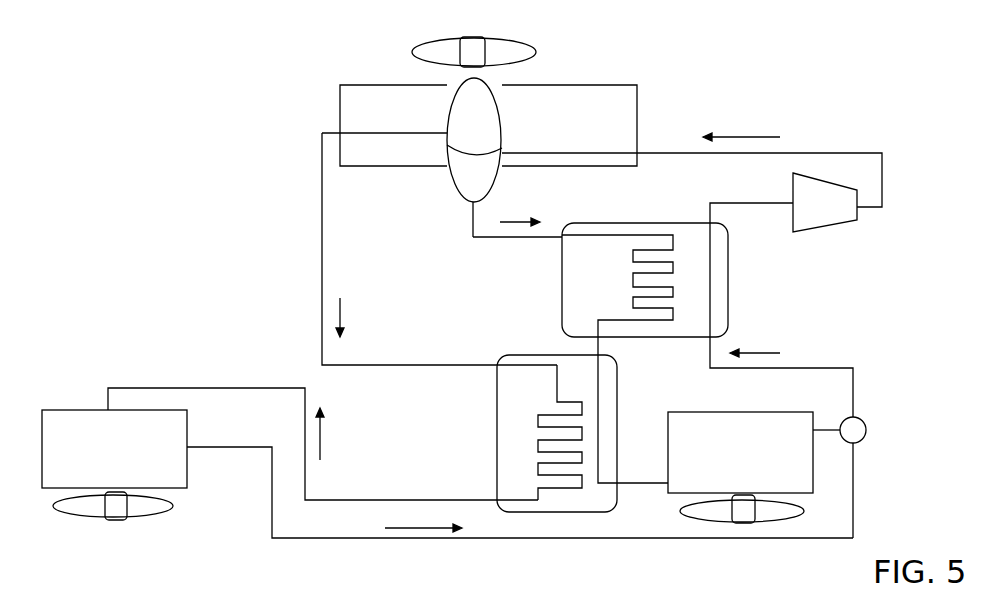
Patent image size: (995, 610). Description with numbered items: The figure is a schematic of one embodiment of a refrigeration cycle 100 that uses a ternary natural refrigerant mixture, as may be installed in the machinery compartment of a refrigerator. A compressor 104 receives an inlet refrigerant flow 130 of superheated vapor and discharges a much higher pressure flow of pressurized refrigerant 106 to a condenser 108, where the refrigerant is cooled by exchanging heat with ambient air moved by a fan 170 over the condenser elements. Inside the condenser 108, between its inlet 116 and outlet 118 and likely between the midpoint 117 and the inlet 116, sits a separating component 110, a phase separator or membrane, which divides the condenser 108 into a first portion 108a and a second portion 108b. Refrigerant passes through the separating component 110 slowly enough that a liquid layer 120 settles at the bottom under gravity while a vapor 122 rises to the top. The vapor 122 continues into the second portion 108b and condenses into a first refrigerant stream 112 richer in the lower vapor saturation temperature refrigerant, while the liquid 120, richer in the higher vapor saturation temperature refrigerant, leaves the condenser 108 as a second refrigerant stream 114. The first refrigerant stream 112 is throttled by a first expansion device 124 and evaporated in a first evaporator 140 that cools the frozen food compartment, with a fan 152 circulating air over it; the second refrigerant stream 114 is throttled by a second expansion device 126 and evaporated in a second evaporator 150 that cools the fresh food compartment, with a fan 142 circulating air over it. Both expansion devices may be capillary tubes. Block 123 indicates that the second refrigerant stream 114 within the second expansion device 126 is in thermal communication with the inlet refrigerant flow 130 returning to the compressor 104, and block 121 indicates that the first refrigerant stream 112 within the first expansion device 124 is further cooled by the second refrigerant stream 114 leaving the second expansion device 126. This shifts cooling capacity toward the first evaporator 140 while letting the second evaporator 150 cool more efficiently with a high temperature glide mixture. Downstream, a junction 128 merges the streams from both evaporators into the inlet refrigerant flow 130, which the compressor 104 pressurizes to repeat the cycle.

The refrigeration cycle 100 is at (752, 62).
The compressor 104 is at (825, 232).
The flow of pressurized refrigerant 106 is at (884, 172).
The condenser 108 is at (593, 85).
The first portion of condenser 108a is at (640, 92).
The second portion of condenser 108b is at (354, 167).
The separating component 110 is at (490, 80).
The first refrigerant stream 112 is at (322, 252).
The second refrigerant stream 114 is at (515, 240).
The inlet of condenser 116 is at (643, 150).
The midpoint of refrigerant flow through condenser 117 is at (505, 180).
The outlet of condenser 118 is at (338, 130).
The liquid layer 120 is at (470, 196).
The block representing thermal communication 121 is at (497, 437).
The vapor 122 is at (455, 120).
The block representing thermal communication 123 is at (730, 300).
The first expansion device 124 is at (537, 415).
The second expansion device 126 is at (675, 262).
The junction 128 is at (866, 430).
The inlet refrigerant flow 130 is at (810, 366).
The first evaporator 140 is at (187, 425).
The fan 142 is at (782, 515).
The second evaporator 150 is at (780, 420).
The fan 152 is at (175, 505).
The fan 170 is at (497, 50).